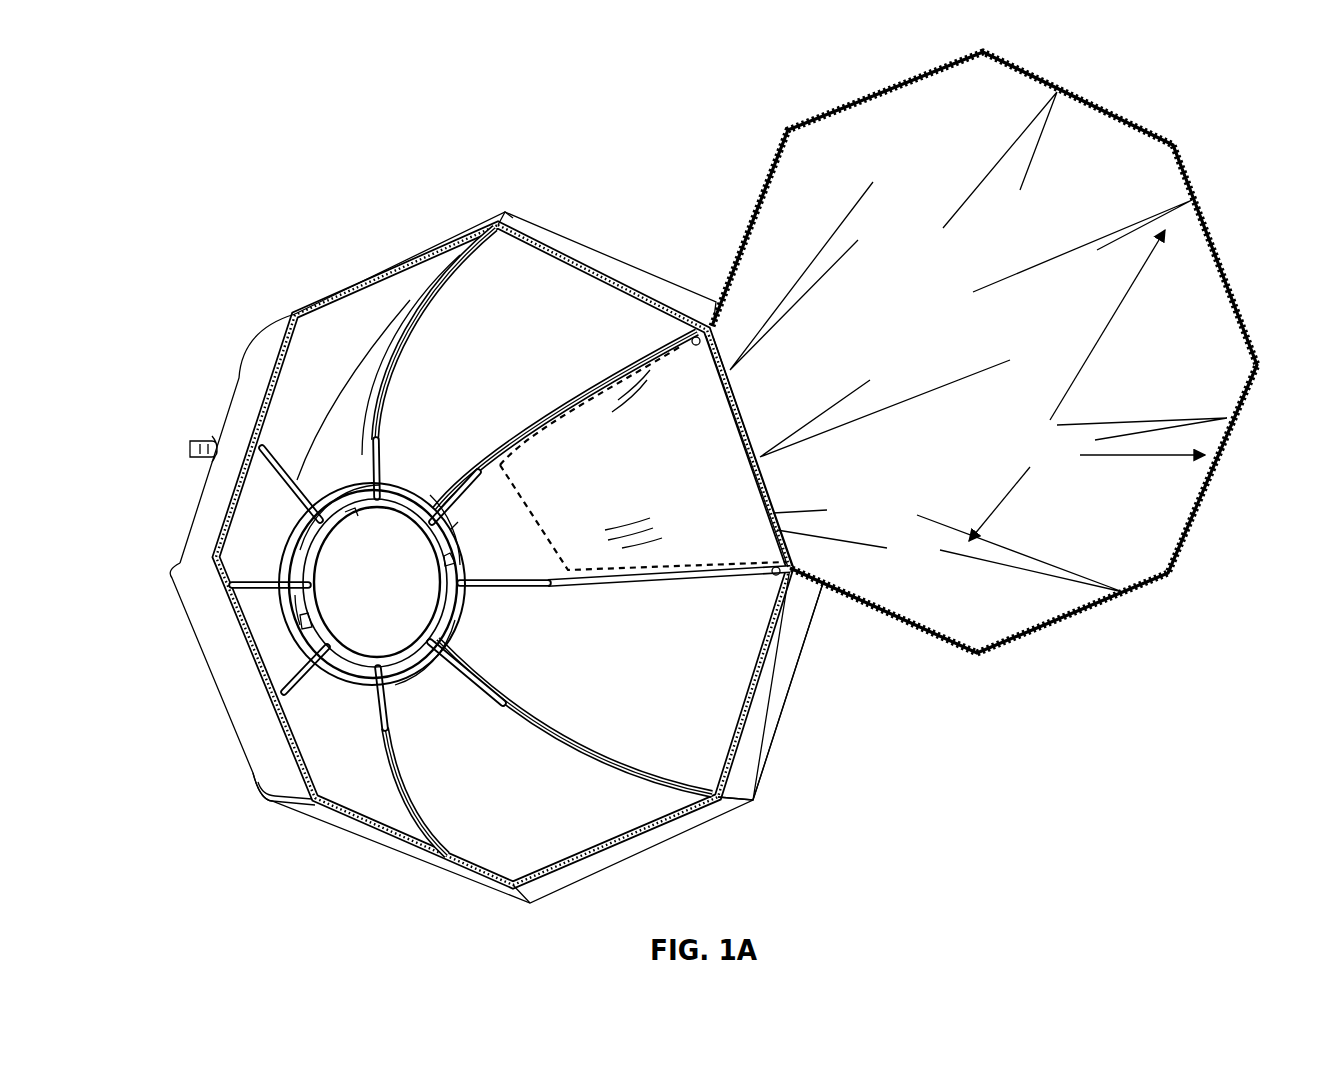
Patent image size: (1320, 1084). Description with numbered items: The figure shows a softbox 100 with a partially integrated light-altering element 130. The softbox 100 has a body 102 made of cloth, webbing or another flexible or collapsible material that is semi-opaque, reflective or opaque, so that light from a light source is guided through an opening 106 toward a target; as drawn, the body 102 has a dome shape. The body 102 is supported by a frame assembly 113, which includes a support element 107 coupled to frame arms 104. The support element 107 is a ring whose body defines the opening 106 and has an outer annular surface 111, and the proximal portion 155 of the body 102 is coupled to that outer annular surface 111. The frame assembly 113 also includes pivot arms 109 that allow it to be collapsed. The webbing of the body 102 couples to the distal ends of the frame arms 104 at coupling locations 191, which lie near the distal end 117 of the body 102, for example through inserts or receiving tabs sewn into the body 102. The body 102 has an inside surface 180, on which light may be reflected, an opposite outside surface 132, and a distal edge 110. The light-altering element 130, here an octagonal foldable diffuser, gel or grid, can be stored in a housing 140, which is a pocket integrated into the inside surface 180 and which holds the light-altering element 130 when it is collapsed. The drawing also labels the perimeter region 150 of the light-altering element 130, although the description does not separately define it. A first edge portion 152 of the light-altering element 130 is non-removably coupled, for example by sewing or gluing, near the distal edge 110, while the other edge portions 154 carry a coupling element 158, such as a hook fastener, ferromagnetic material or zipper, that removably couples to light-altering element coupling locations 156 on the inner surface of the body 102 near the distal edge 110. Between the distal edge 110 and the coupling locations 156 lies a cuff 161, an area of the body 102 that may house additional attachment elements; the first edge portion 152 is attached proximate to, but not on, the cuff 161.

The softbox 100 is at (236, 127).
The body 102 is at (341, 326).
The frame arms 104 is at (441, 295).
The opening 106 is at (372, 584).
The support element 107 is at (454, 535).
The pivot arms 109 is at (375, 440).
The distal edge 110 is at (816, 633).
The outer annular surface 111 is at (411, 484).
The frame assembly 113 is at (509, 680).
The distal end 117 is at (810, 724).
The light-altering element 130 is at (1003, 376).
The outside surface 132 is at (334, 820).
The housing 140 is at (646, 455).
The panel perimeter 150 is at (891, 104).
The first edge portion 152 is at (775, 493).
The other edge portions 154 is at (1087, 385).
The proximal portion 155 is at (430, 734).
The light-altering element coupling locations 156 is at (764, 680).
The coupling element 158 is at (1041, 72).
The cuff 161 is at (724, 808).
The inside surface 180 is at (579, 815).
The coupling locations 191 is at (497, 219).